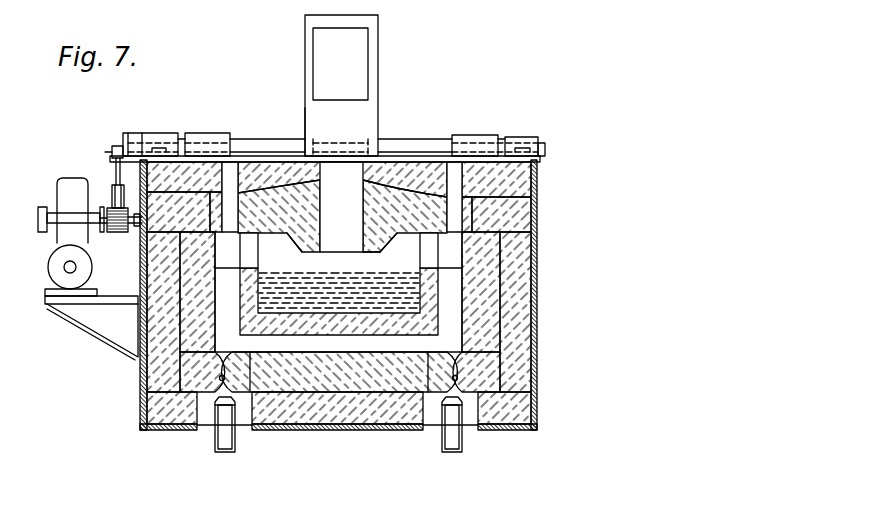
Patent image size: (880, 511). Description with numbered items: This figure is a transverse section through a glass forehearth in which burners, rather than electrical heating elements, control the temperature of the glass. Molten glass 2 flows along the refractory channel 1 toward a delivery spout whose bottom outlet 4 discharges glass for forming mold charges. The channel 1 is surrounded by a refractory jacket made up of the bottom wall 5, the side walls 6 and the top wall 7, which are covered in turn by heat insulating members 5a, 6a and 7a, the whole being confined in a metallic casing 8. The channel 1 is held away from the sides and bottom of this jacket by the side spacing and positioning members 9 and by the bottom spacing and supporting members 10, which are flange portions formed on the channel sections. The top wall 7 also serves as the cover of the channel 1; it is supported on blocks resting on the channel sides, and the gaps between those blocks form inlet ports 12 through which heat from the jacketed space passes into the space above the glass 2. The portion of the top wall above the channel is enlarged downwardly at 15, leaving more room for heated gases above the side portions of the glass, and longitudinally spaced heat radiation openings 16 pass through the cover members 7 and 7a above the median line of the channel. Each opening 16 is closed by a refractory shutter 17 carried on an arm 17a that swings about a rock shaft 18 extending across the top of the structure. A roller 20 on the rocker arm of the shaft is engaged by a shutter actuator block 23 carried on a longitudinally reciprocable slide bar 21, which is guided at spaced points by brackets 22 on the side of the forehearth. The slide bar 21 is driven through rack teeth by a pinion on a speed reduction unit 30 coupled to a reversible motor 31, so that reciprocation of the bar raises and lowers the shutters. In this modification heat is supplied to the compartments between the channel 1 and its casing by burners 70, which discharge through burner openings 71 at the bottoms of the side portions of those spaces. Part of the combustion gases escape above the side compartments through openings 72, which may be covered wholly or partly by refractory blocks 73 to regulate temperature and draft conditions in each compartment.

The refractory channel 1 is at (433, 300).
The molten glass 2 is at (331, 292).
The outlet 4 is at (368, 238).
The refractory bottom wall 5 is at (323, 378).
The heat insulating bottom member 5a is at (300, 412).
The refractory side walls 6 is at (553, 293).
The heat insulating side members 6a is at (164, 378).
The refractory top wall 7 is at (401, 218).
The heat insulating top member 7a is at (388, 158).
The metallic casing 8 is at (534, 403).
The side spacing and positioning members 9 is at (216, 318).
The bottom spacing and supporting members 10 is at (353, 350).
The inlet ports 12 is at (246, 267).
The downwardly enlarged portion 15 is at (308, 238).
The heat radiation openings 16 is at (406, 162).
The shutter 17 is at (358, 52).
The carrying arm 17a is at (353, 115).
The rock shaft 18 is at (432, 148).
The roller 20 is at (117, 146).
The slide bar 21 is at (112, 198).
The guiding and supporting brackets 22 is at (113, 238).
The shutter actuator block 23 is at (117, 170).
The speed reduction unit 30 is at (67, 192).
The reversible motor 31 is at (53, 272).
The burners 70 is at (229, 440).
The burner openings 71 is at (218, 380).
The openings 72 is at (239, 173).
The refractory blocks 73 is at (200, 143).